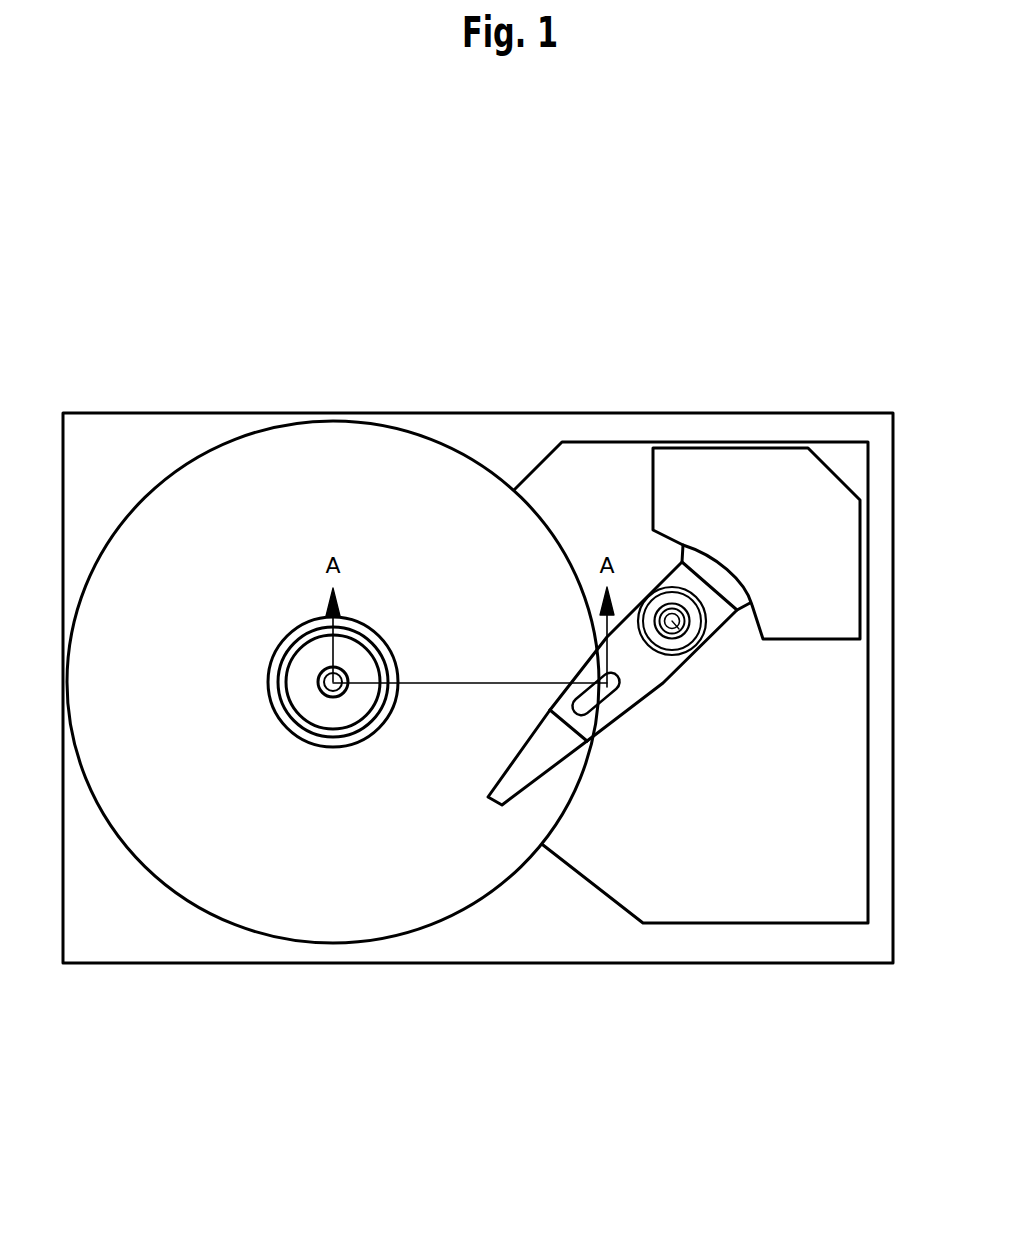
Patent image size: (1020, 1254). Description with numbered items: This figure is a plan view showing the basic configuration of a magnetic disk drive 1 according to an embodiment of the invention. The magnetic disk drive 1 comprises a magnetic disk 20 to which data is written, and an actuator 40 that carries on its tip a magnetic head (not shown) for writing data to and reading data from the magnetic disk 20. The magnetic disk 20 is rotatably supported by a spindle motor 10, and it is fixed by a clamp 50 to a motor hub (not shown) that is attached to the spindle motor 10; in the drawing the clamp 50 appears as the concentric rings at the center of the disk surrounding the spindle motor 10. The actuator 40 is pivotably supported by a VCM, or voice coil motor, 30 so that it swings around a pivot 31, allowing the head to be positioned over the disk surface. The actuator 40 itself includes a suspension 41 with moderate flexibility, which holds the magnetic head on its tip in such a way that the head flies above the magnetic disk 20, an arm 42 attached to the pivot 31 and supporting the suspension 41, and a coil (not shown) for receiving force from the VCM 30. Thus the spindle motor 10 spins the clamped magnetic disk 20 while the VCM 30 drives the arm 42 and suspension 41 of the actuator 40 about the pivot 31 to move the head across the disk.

The magnetic disk drive 1 is at (484, 398).
The spindle motor 10 is at (322, 693).
The magnetic disk 20 is at (262, 862).
The VCM (Voice Coil Motor) 30 is at (782, 550).
The pivot 31 is at (680, 627).
The actuator 40 is at (602, 858).
The suspension 41 is at (542, 757).
The arm 42 is at (627, 713).
The clamp 50 is at (385, 710).